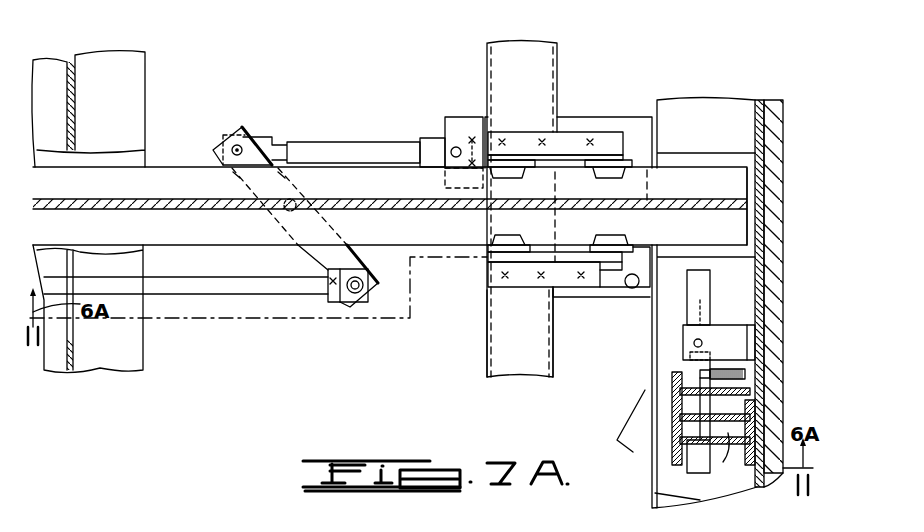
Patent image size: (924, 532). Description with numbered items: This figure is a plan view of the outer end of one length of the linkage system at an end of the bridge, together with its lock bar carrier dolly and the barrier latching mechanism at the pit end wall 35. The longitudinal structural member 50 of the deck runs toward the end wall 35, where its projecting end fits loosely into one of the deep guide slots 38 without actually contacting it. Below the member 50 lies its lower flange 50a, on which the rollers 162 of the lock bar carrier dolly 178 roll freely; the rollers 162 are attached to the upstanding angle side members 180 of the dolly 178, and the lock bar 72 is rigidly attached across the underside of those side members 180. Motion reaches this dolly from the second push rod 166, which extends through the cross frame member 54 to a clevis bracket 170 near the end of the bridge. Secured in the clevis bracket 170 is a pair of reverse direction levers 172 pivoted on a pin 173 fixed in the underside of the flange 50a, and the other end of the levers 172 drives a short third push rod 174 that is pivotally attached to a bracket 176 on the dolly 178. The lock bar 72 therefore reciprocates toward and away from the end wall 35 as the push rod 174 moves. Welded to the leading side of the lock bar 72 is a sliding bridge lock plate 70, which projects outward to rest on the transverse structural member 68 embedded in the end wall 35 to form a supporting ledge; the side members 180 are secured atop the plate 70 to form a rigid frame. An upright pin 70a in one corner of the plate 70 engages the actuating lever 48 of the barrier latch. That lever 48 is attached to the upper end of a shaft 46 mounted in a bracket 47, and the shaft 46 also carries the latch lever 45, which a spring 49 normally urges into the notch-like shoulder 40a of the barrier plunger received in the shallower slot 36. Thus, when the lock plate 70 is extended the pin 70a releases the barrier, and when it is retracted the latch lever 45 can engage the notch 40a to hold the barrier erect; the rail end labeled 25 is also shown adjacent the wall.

The cross frame member 54 is at (123, 76).
The longitudinal structural member 50 is at (159, 188).
The lower flange 50a is at (195, 165).
The third push rod 174 is at (350, 141).
The bracket 176 is at (462, 94).
The upstanding angle side members 180 is at (518, 132).
The rollers 162 is at (520, 178).
The lock bar carrier dolly 178 is at (584, 294).
The pin 173 is at (318, 188).
The reverse direction levers 172 is at (321, 224).
The clevis bracket 170 is at (338, 302).
The second push rod 166 is at (232, 294).
The lock bar 72 is at (487, 368).
The transverse horizontal structural metal members 68 is at (725, 134).
The slots 38 is at (737, 258).
The rail end 25 is at (748, 162).
The sliding bridge lock plate 70 is at (648, 300).
The pin 70a is at (636, 275).
The actuating lever 48 is at (702, 301).
The bracket 47 is at (733, 345).
The shaft 46 is at (695, 345).
The spring 49 is at (745, 375).
The latch lever 45 is at (622, 430).
The notch-like shoulder 40a is at (663, 412).
The slots 36 is at (722, 464).
The end wall 35 is at (655, 493).